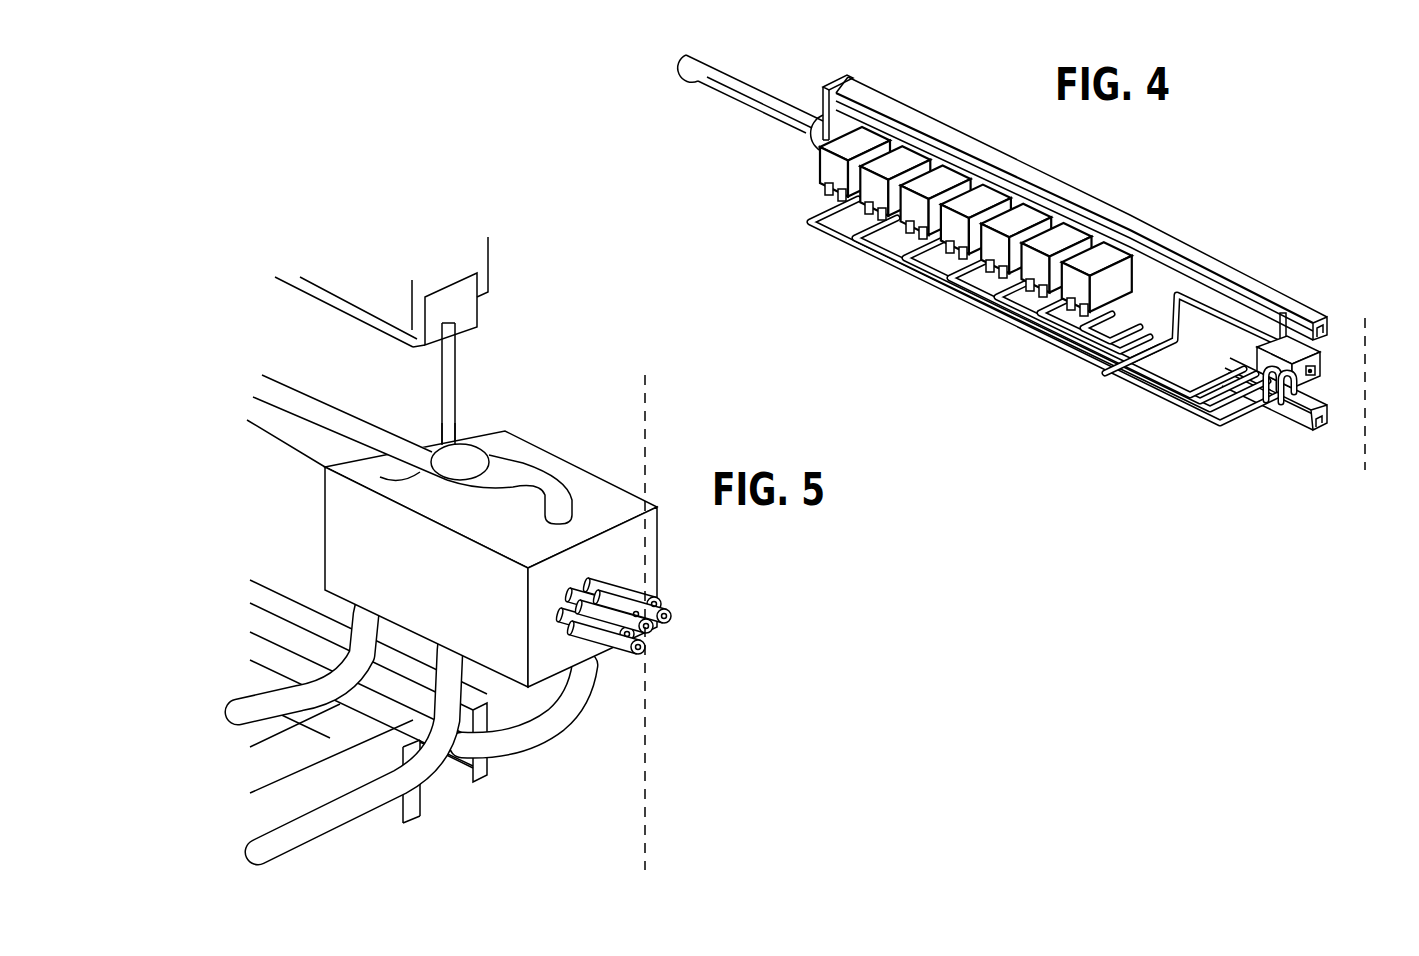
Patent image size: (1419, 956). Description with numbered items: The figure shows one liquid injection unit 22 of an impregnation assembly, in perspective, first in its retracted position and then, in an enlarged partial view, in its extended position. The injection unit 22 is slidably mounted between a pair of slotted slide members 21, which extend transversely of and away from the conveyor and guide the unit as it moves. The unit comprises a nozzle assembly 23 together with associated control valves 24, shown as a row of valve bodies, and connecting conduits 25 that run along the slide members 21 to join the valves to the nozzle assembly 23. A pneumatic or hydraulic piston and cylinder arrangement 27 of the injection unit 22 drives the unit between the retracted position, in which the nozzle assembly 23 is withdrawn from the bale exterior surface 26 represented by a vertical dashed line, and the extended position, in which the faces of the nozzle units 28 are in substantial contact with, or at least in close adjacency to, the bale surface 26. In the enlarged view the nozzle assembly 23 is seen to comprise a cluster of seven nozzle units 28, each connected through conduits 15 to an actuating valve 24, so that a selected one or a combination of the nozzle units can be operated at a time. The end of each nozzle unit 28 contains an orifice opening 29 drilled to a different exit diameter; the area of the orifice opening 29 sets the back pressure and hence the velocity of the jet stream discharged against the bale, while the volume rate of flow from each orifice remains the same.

In FIG. 5, the conduits 15 is at (280, 830).
In FIG. 4, the slotted slide members 21 is at (1300, 307).
In FIG. 5, the slotted slide members 21 is at (352, 285).
In FIG. 4, the liquid injection unit 22 is at (1151, 418).
In FIG. 4, the nozzle assembly 23 is at (1320, 358).
In FIG. 5, the nozzle assembly 23 is at (616, 522).
In FIG. 4, the control valves 24 is at (1112, 258).
In FIG. 4, the connecting conduits 25 is at (1092, 353).
In FIG. 4, the bale exterior surface 26 is at (1365, 450).
In FIG. 5, the bale exterior surface 26 is at (650, 408).
In FIG. 4, the piston and cylinder arrangement 27 is at (708, 75).
In FIG. 5, the nozzle units 28 is at (657, 607).
In FIG. 5, the orifice opening 29 is at (670, 613).